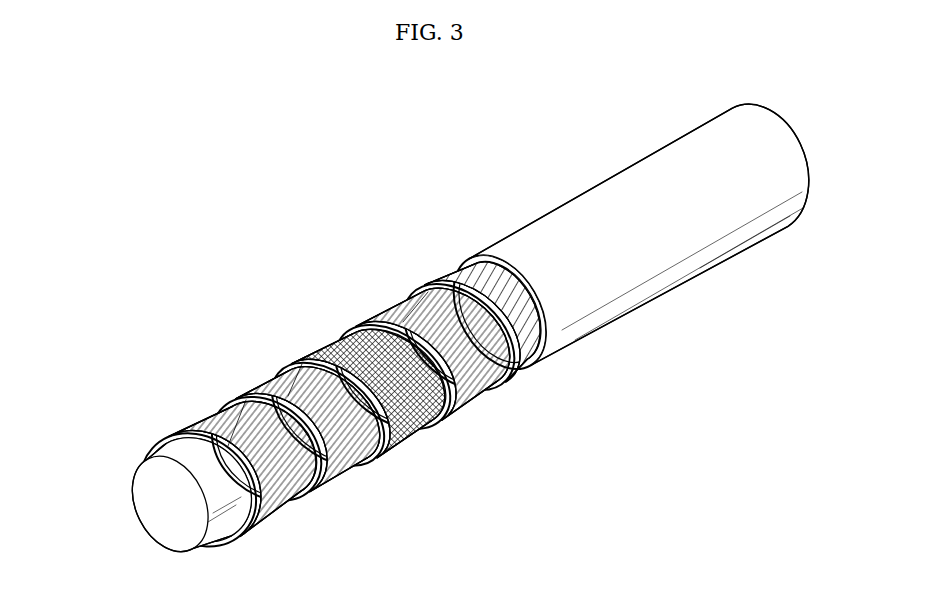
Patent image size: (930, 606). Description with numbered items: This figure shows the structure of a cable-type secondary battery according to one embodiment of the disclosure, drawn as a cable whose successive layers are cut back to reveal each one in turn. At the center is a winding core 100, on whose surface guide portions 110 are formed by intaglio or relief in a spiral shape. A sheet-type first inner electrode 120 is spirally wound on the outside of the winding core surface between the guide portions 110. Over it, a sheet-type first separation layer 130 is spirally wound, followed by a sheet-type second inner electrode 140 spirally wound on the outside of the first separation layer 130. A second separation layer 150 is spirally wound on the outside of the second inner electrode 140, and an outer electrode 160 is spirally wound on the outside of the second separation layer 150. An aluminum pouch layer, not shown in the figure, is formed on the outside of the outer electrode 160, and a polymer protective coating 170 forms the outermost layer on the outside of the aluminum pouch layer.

The winding core 100 is at (100, 404).
The guide portions 110 is at (182, 432).
The first inner electrode 120 is at (283, 488).
The first separation layer 130 is at (342, 447).
The second inner electrode 140 is at (407, 415).
The second separation layer 150 is at (467, 382).
The outer electrode 160 is at (527, 343).
The polymer protective coating 170 is at (643, 290).